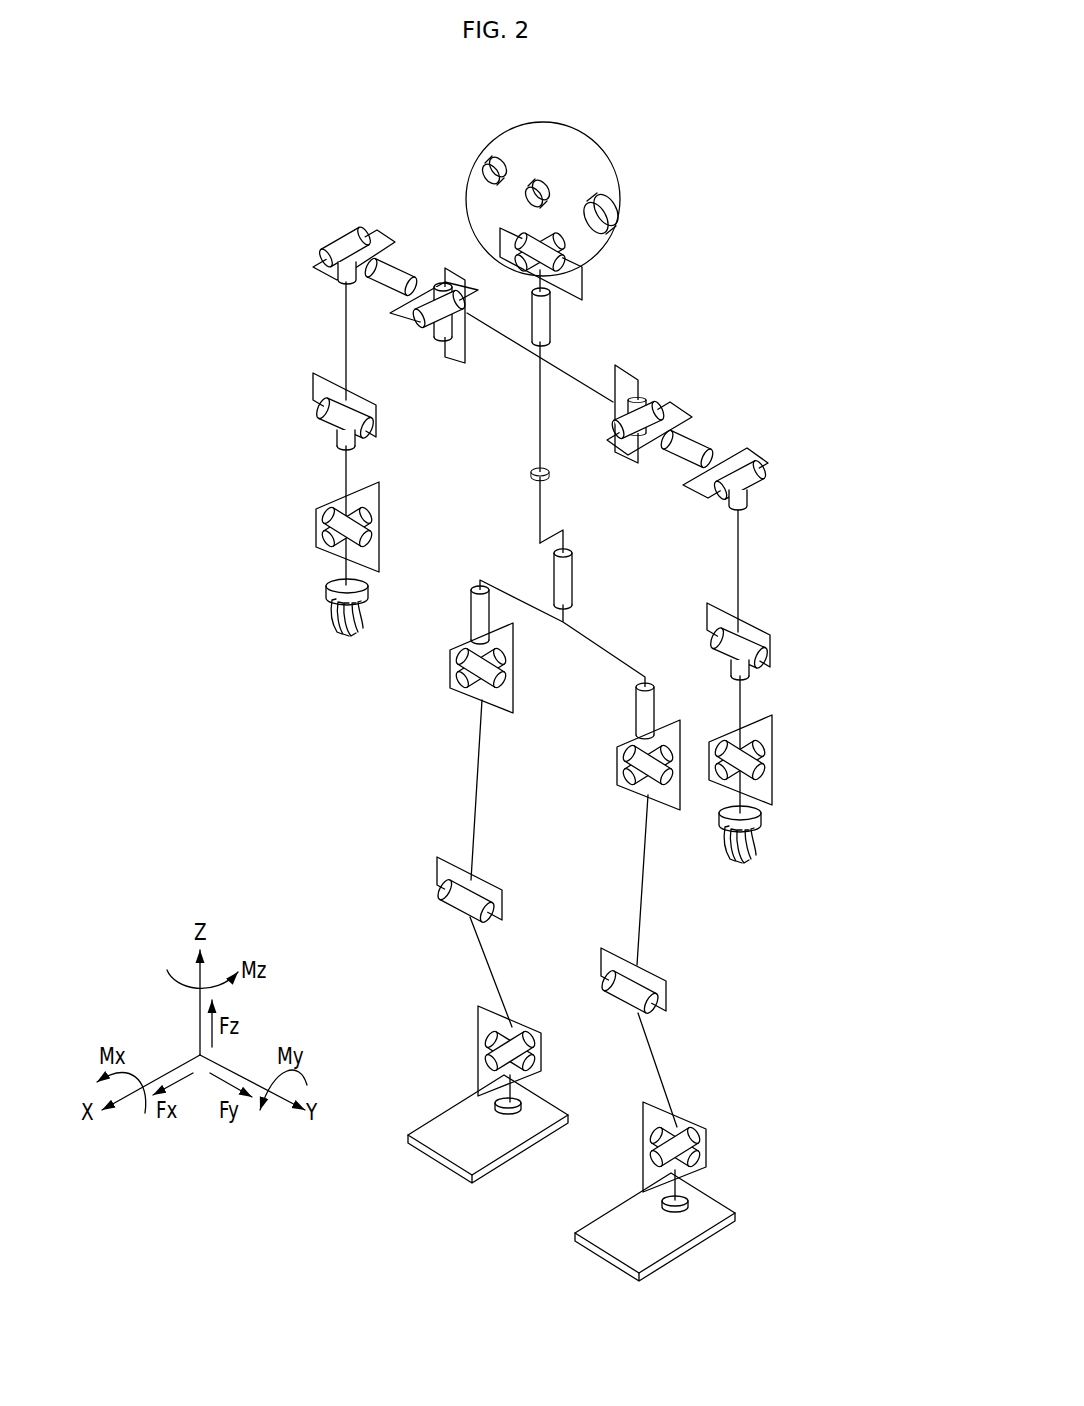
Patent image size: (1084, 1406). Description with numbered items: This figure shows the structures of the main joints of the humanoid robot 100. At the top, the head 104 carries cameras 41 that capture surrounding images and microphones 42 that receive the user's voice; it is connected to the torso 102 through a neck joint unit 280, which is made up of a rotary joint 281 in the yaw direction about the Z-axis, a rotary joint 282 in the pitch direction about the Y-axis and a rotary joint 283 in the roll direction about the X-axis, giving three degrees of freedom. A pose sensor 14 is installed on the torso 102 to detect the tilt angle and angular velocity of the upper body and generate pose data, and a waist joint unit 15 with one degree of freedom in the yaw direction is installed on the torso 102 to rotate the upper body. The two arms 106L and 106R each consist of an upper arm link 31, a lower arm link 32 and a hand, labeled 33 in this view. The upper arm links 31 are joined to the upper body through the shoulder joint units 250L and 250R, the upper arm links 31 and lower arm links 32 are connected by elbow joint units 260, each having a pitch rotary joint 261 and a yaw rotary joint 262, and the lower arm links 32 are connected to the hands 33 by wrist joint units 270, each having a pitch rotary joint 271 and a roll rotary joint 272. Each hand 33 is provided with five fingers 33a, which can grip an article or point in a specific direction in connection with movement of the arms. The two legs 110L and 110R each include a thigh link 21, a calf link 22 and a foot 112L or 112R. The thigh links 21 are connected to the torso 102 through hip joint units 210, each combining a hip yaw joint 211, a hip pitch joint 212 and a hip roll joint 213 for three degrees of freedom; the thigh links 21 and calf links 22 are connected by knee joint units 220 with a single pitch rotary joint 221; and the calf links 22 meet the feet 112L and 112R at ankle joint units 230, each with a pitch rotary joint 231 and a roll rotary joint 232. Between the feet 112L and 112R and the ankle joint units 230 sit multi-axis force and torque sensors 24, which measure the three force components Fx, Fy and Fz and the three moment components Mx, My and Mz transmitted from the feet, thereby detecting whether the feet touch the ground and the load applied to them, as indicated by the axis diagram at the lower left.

The robot 100 is at (531, 676).
The torso 102 is at (557, 514).
The head 104 is at (610, 148).
The arm 106R is at (500, 500).
The arm 106L is at (701, 464).
The leg 110R is at (544, 937).
The leg 110L is at (675, 1094).
The foot 112R is at (440, 1160).
The foot 112L is at (600, 1252).
The cameras 41 is at (527, 197).
The microphones 42 is at (606, 215).
The pose sensor 14 is at (550, 477).
The waist joint unit 15 is at (572, 575).
The thigh link 21 is at (473, 793).
The calf link 22 is at (487, 968).
The multi-axis force and torque sensor 24 is at (515, 1110).
The upper arm link 31 is at (345, 318).
The lower arm link 32 is at (345, 460).
The hand 33 is at (549, 721).
The fingers 33a is at (333, 622).
The hip joint unit 210 is at (515, 731).
The hip yaw joint 211 is at (478, 615).
The hip pitch joint 212 is at (508, 680).
The hip roll joint 213 is at (465, 695).
The knee joint unit 220 is at (559, 925).
The rotary joint 221 is at (480, 892).
The ankle joint unit 230 is at (592, 1091).
The rotary joint 231 is at (538, 1062).
The rotary joint 232 is at (525, 1040).
The shoulder joint unit 250R is at (348, 222).
The shoulder joint unit 250L is at (700, 400).
The elbow joint unit 260 is at (519, 510).
The rotary joint 261 is at (345, 402).
The rotary joint 262 is at (350, 438).
The wrist joint unit 270 is at (541, 643).
The rotary joint 271 is at (370, 537).
The rotary joint 272 is at (365, 515).
The neck joint unit 280 is at (545, 295).
The rotary joint 281 is at (547, 320).
The rotary joint 282 is at (563, 257).
The rotary joint 283 is at (520, 263).